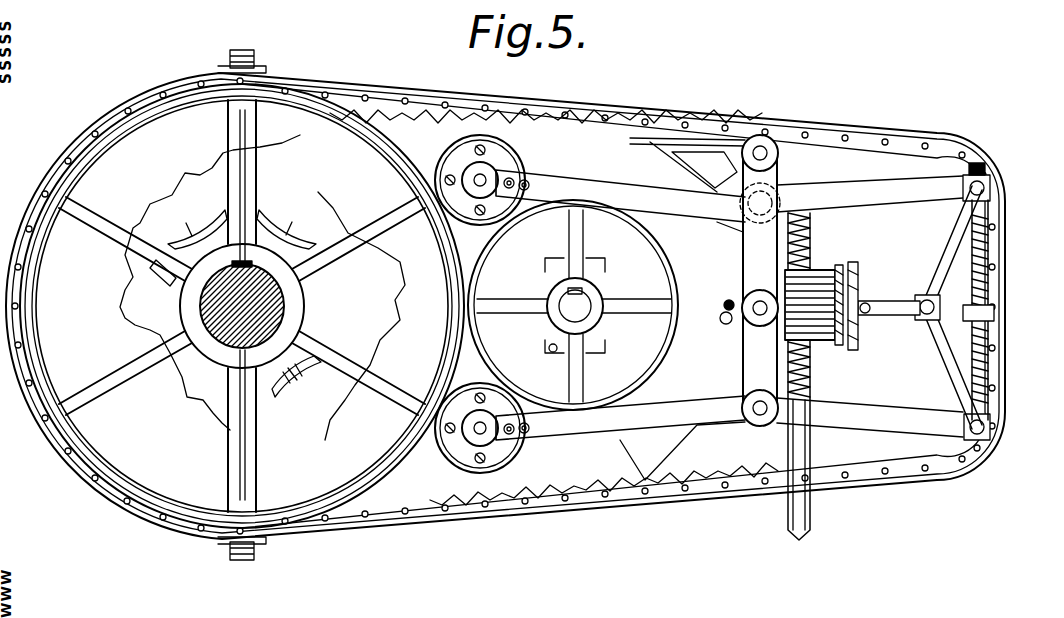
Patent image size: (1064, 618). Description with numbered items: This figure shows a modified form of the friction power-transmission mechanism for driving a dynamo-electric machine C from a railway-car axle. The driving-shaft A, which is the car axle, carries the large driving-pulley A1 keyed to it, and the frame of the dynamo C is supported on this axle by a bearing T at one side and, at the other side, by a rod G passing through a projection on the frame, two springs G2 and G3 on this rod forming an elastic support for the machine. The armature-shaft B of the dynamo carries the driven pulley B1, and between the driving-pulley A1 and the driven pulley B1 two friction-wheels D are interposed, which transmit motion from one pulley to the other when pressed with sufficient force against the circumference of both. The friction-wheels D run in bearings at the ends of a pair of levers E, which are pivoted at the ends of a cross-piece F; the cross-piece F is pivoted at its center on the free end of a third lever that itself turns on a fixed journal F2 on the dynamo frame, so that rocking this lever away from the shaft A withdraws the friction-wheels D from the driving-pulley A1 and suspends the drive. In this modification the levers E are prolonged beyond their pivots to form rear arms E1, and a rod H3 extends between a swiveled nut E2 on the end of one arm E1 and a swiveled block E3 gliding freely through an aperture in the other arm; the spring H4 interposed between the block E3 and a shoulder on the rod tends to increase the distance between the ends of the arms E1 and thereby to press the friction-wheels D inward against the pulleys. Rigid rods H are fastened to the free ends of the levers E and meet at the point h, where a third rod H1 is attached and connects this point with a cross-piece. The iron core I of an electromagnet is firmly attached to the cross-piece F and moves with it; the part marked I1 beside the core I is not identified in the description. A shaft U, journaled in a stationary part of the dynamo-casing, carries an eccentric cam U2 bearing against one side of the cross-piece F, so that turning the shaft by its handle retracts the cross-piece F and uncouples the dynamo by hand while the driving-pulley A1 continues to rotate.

The bearing T is at (200, 238).
The driving-shaft A is at (262, 291).
The driving-pulley A1 is at (350, 488).
The armature-shaft B is at (568, 308).
The driven pulley B1 is at (645, 315).
The friction-wheels D is at (442, 163).
The levers E is at (633, 192).
The rear arms E1 is at (876, 200).
The swiveled nut E2 is at (986, 434).
The swiveled block E3 is at (990, 188).
The cross-piece F is at (766, 258).
The fixed journal F2 is at (760, 148).
The dynamo-electric machine C is at (732, 222).
The shaft U is at (724, 324).
The eccentric cam U2 is at (724, 306).
The rod G is at (786, 440).
The spring G2 is at (810, 372).
The spring G3 is at (812, 258).
The rigid rods H is at (948, 258).
The third rod H1 is at (893, 306).
The rod H3 is at (988, 287).
The spring H4 is at (988, 365).
The meeting point h is at (920, 318).
The iron core of electromagnet I is at (830, 346).
The spool flange disc I1 is at (858, 326).